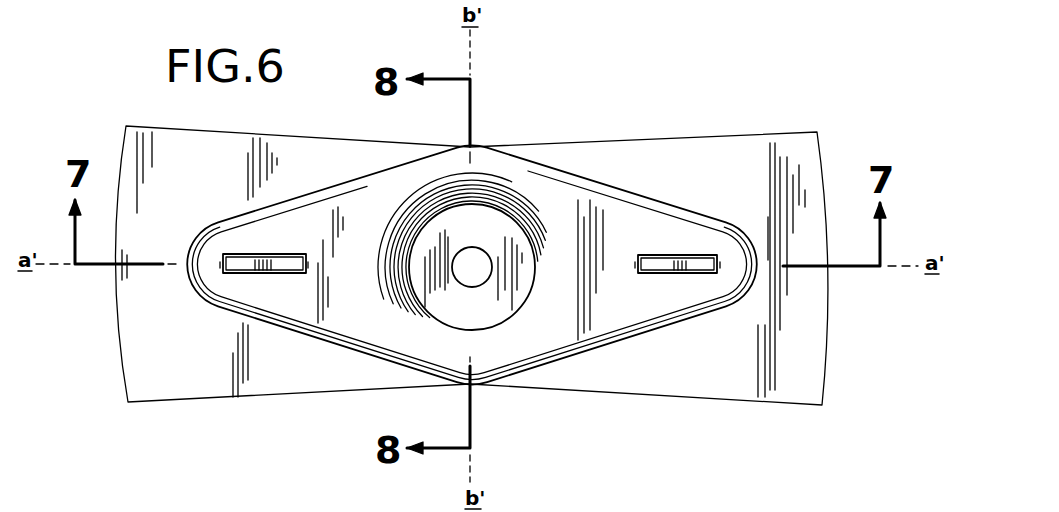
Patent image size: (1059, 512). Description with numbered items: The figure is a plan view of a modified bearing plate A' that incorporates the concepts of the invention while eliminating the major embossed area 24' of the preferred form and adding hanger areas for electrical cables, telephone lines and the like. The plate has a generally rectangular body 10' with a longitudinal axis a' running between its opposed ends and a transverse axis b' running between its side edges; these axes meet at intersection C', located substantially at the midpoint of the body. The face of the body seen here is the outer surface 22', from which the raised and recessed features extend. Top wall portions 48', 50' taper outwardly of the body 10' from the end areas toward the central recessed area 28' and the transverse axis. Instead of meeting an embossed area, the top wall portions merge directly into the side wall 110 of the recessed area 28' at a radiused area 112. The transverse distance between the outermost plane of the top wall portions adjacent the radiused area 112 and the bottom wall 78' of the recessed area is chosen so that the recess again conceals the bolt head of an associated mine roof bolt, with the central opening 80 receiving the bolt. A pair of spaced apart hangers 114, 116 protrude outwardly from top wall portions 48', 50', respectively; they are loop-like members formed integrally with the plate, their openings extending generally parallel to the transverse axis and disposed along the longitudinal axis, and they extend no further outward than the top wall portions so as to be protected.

The body 10' is at (458, 251).
The outer surface 22' is at (279, 244).
The major embossed area 24' is at (649, 241).
The bearing plate A' is at (533, 105).
The recessed area 28' is at (449, 251).
The top wall portion 48' is at (368, 240).
The top wall portion 50' is at (628, 234).
The intersection C' is at (476, 238).
The bottom wall 78' is at (494, 286).
The central aperture 80 is at (458, 278).
The side wall 110 is at (437, 317).
The radiused area 112 is at (398, 292).
The hanger 114 is at (273, 266).
The hanger 116 is at (672, 264).